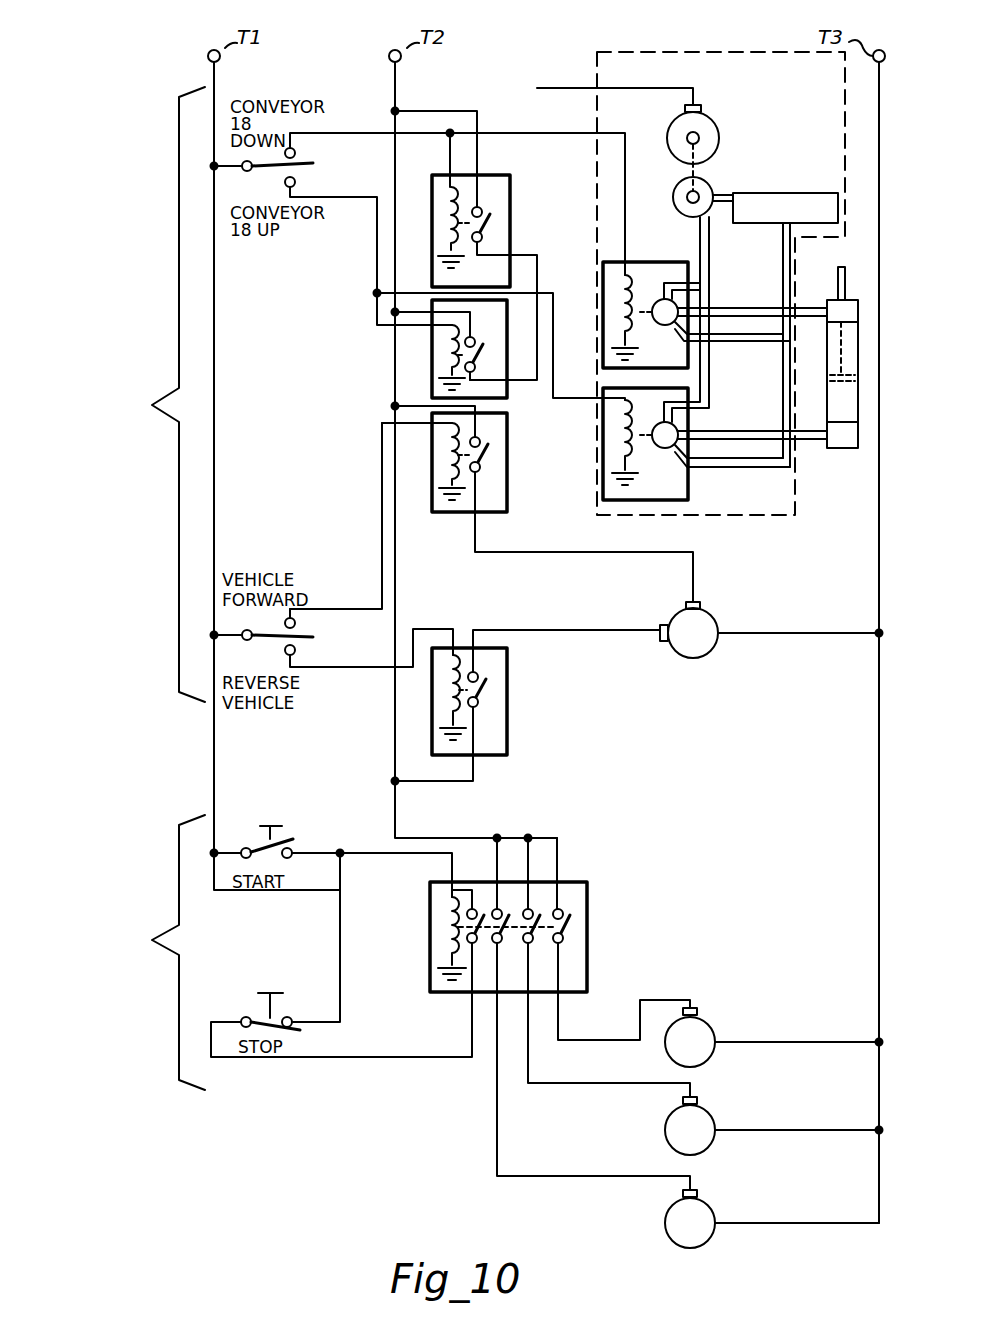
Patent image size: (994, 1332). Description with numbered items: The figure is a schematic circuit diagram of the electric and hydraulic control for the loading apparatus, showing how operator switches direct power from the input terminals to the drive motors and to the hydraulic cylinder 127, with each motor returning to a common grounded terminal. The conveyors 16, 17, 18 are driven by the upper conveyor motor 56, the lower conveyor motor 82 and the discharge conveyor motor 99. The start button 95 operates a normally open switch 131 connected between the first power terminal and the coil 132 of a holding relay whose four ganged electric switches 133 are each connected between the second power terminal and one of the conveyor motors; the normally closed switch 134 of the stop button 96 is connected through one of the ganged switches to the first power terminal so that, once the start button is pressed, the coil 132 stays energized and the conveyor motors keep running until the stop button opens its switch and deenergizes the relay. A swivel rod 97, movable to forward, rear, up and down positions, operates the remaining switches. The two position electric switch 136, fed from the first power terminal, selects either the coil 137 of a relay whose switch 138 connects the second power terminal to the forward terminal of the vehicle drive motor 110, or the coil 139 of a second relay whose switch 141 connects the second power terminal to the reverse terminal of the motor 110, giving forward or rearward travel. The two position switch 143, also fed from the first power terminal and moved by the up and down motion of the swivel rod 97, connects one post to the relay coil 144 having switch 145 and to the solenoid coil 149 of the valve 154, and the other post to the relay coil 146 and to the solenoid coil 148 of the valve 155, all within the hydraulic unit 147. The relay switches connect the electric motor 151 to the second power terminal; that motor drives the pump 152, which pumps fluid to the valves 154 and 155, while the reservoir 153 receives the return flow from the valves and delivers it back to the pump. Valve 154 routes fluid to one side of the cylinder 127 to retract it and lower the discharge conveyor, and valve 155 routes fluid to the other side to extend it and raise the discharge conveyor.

The conveyor 16 is at (111, 952).
The conveyor 17 is at (111, 952).
The conveyor 18 is at (111, 952).
The upper conveyor motor 56 is at (702, 1213).
The lower conveyor motor 82 is at (702, 1120).
The start button 95 is at (272, 828).
The stop button 96 is at (293, 975).
The swivel rod 97 is at (131, 394).
The discharge conveyor motor 99 is at (700, 1032).
The vehicle drive motor 110 is at (700, 622).
The hydraulic cylinder 127 is at (836, 322).
The start button switch 131 is at (290, 832).
The holding relay coil 132 is at (450, 946).
The ganged electric switches 133 is at (570, 920).
The stop button switch 134 is at (284, 1016).
The two position electric switch 136 is at (305, 633).
The forward relay coil 137 is at (454, 484).
The forward relay switch 138 is at (488, 450).
The reverse relay coil 139 is at (450, 685).
The reverse relay switch 141 is at (486, 690).
The two position switch 143 is at (313, 163).
The relay coil 144 is at (424, 205).
The relay switch 145 is at (514, 205).
The relay coil 146 is at (449, 346).
The hydraulic unit 147 is at (480, 352).
The solenoid coil 148 is at (630, 446).
The solenoid coil 149 is at (605, 296).
The pump motor 151 is at (708, 116).
The pump 152 is at (707, 178).
The reservoir 153 is at (773, 200).
The solenoid operated valve 154 is at (642, 299).
The solenoid operated valve 155 is at (668, 448).